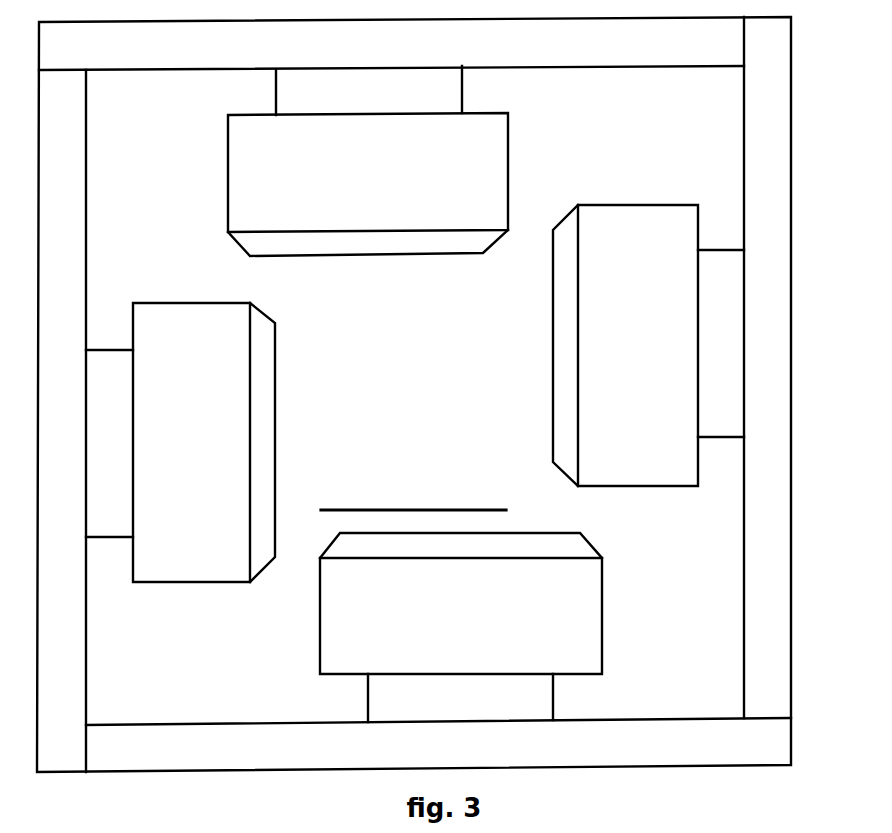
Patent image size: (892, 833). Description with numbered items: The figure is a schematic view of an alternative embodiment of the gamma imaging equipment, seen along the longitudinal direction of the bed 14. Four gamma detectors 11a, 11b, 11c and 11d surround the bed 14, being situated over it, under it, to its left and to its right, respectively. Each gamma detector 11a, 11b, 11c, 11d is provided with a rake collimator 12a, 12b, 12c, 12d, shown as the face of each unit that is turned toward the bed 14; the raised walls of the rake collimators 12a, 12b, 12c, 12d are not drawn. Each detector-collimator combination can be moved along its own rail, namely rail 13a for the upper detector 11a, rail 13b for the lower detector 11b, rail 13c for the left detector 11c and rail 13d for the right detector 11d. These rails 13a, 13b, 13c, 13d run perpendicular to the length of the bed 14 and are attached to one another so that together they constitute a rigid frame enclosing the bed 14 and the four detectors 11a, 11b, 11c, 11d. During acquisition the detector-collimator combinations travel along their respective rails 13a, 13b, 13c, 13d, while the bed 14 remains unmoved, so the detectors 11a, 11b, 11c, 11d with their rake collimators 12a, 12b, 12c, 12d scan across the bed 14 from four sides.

The gamma detector 11a is at (368, 149).
The gamma detector 11b is at (461, 640).
The gamma detector 11c is at (168, 442).
The gamma detector 11d is at (661, 345).
The rake collimator 12a is at (368, 243).
The rake collimator 12b is at (461, 546).
The rake collimator 12c is at (261, 483).
The rake collimator 12d is at (570, 333).
The rail 13a is at (391, 51).
The rail 13b is at (438, 738).
The rail 13c is at (64, 421).
The rail 13d is at (766, 367).
The bed 14 is at (413, 493).